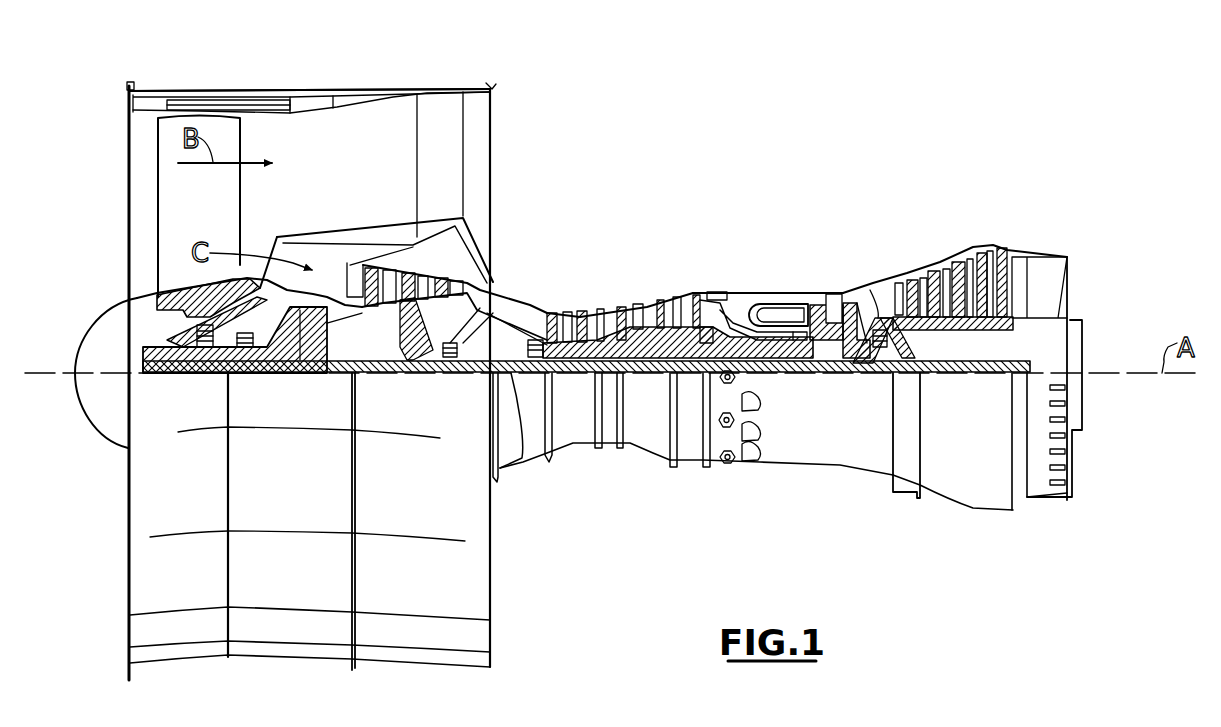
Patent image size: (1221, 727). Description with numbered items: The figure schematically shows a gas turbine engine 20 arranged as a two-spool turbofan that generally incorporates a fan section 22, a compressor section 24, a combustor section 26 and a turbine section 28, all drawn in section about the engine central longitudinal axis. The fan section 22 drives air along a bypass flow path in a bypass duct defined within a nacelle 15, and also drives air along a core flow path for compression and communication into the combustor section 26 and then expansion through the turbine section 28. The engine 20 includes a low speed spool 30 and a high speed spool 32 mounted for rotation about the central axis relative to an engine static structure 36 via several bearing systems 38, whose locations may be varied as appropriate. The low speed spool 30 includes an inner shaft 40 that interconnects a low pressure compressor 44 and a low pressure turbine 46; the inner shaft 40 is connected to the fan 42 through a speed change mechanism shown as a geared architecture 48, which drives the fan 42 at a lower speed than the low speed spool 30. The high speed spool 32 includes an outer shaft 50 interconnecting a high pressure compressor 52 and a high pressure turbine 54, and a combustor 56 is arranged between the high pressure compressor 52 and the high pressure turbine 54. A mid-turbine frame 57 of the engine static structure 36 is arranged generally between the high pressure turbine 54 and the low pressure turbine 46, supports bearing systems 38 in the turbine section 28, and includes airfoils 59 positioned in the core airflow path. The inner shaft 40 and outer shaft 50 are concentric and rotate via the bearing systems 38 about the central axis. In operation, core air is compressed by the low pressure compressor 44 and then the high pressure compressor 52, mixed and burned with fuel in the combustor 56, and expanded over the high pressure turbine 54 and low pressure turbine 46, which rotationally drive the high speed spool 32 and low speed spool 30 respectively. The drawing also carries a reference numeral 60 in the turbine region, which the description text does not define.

The nacelle 15 is at (310, 90).
The gas turbine engine 20 is at (776, 136).
The fan section 22 is at (240, 82).
The compressor section 24 is at (542, 281).
The combustor section 26 is at (763, 266).
The turbine section 28 is at (912, 231).
The low speed spool 30 is at (647, 382).
The high speed spool 32 is at (697, 291).
The engine static structure 36 is at (690, 464).
The bearing systems 38 is at (447, 356).
The inner shaft 40 is at (508, 373).
The fan 42 is at (183, 218).
The low pressure compressor 44 is at (413, 280).
The low pressure turbine 46 is at (957, 266).
The geared architecture 48 is at (312, 356).
The outer shaft 50 is at (775, 374).
The high pressure compressor 52 is at (627, 306).
The high pressure turbine 54 is at (830, 293).
The combustor 56 is at (763, 317).
The mid-turbine frame 57 is at (875, 279).
The airfoils 59 is at (903, 338).
The turbine vane 60 is at (918, 288).